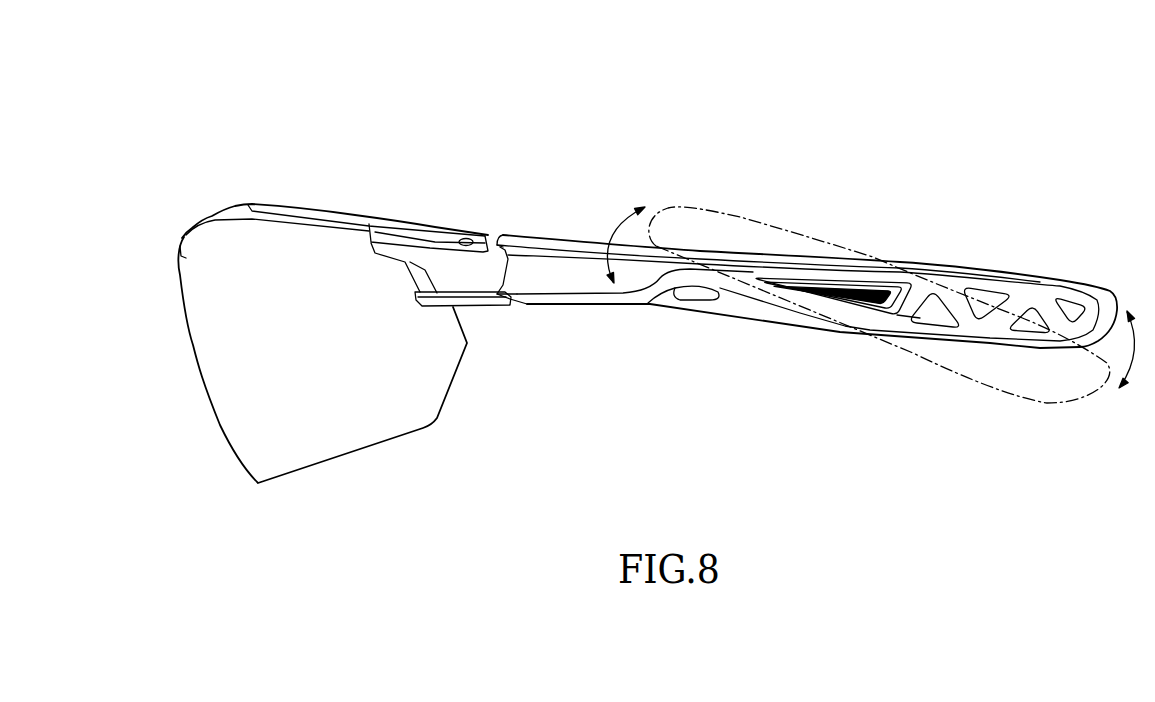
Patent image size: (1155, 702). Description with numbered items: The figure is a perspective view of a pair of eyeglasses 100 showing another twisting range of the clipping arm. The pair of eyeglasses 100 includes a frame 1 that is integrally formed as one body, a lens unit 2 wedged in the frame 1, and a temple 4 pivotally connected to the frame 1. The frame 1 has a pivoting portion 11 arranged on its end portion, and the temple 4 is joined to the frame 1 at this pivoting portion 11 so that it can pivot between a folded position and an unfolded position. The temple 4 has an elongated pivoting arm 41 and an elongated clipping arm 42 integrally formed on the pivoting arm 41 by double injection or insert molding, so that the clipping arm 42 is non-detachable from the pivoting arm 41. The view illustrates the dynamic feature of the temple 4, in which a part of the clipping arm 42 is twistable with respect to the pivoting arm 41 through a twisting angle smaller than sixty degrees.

The pair of eyeglasses 100 is at (210, 40).
The frame 1 is at (238, 203).
The pivoting portion 11 is at (428, 234).
The lens unit 2 is at (203, 388).
The temple 4 is at (651, 311).
The pivoting arm 41 is at (945, 272).
The clipping arm 42 is at (560, 278).